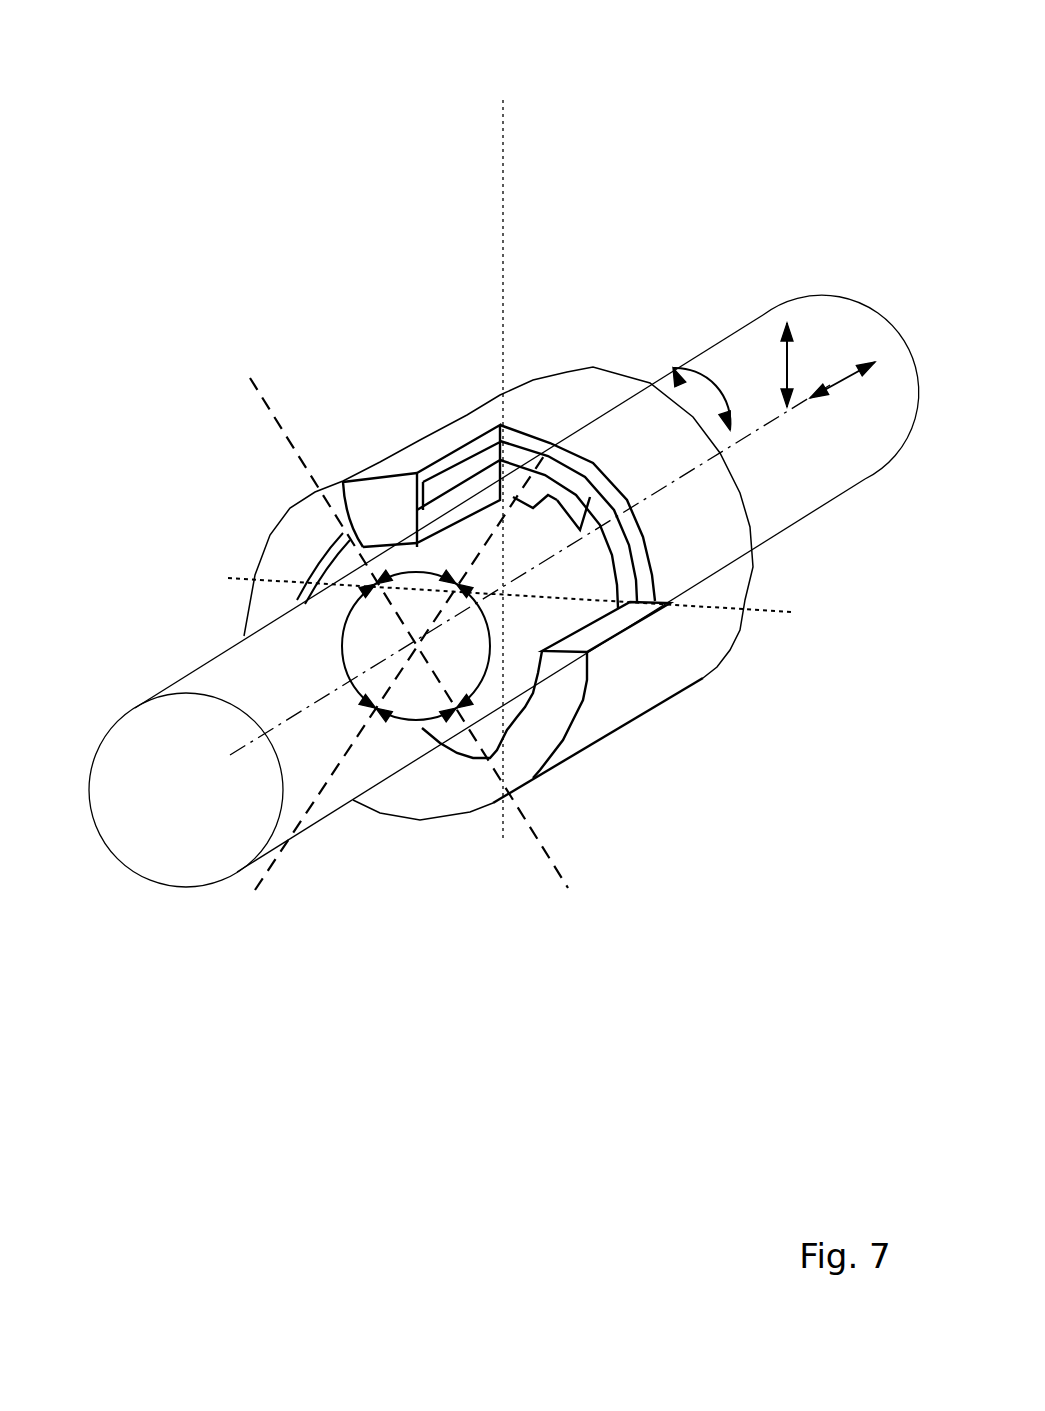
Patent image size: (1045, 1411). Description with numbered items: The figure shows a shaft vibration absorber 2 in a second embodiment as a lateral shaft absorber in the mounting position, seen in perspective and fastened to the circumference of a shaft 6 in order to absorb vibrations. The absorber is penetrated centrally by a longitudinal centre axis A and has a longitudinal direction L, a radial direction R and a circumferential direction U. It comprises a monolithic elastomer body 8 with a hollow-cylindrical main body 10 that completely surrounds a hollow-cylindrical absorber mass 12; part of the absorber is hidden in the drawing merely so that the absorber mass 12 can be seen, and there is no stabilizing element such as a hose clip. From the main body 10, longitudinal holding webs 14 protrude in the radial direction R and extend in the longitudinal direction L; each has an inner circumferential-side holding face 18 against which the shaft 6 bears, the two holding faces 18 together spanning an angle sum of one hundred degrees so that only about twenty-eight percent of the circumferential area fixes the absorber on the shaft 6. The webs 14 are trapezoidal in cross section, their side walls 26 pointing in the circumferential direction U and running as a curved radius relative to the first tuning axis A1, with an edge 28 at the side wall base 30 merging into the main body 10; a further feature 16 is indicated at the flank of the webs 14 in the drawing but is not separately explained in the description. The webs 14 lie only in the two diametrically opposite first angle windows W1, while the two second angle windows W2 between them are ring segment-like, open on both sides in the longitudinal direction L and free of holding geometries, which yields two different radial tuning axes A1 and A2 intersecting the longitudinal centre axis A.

The shaft vibration absorber 2 is at (343, 482).
The shaft 6 is at (182, 892).
The elastomer body 8 is at (373, 463).
The main body 10 is at (593, 622).
The absorber mass 12 is at (470, 450).
The longitudinal holding webs 14 is at (540, 498).
The engagement surface 16 is at (575, 503).
The holding face 18 is at (472, 513).
The side walls 26 is at (584, 530).
The edge 28 is at (353, 537).
The side wall base 30 is at (352, 538).
The longitudinal centre axis A is at (742, 455).
The first tuning axis A1 is at (510, 130).
The second tuning axis A2 is at (788, 611).
The first angle windows W1 is at (259, 396).
The second angle windows W2 is at (278, 432).
The radial direction R is at (793, 360).
The circumferential direction U is at (717, 393).
The longitudinal direction L is at (848, 388).